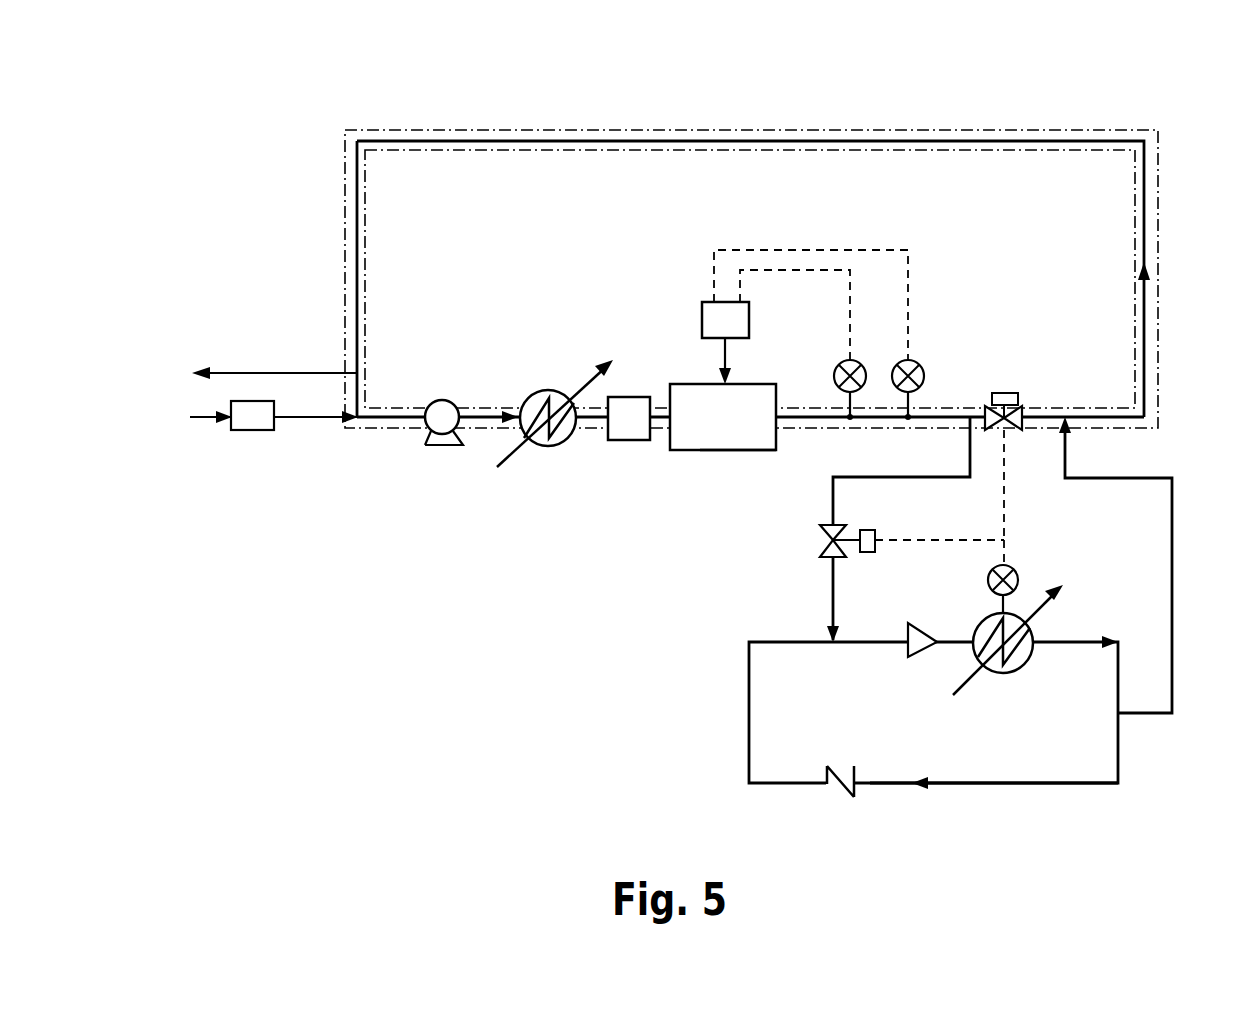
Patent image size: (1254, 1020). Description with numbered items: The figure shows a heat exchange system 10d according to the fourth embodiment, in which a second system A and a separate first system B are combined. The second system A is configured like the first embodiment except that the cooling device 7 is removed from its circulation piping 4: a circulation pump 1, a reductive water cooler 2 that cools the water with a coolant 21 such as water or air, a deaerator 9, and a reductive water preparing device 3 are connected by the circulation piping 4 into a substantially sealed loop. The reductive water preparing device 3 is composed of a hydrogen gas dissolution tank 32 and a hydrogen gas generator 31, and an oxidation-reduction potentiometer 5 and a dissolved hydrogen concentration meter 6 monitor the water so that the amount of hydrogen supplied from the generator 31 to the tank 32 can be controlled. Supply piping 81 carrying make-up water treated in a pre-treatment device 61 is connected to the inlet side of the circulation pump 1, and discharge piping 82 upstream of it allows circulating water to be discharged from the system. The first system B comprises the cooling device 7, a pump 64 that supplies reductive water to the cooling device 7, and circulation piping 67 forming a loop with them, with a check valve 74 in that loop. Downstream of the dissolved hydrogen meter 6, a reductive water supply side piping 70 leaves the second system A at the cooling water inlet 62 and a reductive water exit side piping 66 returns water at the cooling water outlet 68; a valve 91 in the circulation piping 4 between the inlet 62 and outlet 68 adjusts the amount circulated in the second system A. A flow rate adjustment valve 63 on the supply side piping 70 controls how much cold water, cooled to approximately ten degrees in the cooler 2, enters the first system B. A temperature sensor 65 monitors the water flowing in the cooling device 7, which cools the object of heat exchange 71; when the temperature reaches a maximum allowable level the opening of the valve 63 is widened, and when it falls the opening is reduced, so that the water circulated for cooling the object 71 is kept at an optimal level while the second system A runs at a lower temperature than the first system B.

The heat exchange system 10d is at (902, 118).
The circulation piping 4 is at (1150, 357).
The second system A is at (1158, 237).
The first system B is at (740, 739).
The discharge piping 82 is at (258, 372).
The pre-treatment device 61 is at (242, 431).
The supply piping 81 is at (325, 420).
The circulation pump 1 is at (425, 441).
The reductive water cooler 2 is at (550, 447).
The coolant 21 is at (590, 396).
The deaerator 9 is at (630, 442).
The reductive water preparing device 3 is at (710, 463).
The hydrogen gas dissolution tank 32 is at (740, 451).
The hydrogen gas generator 31 is at (702, 318).
The oxidation-reduction potentiometer 5 is at (838, 370).
The dissolved hydrogen concentration meter 6 is at (925, 371).
The cooling water inlet 62 is at (980, 409).
The cooling water outlet 68 is at (1066, 412).
The valve 91 is at (1024, 440).
The reductive water supply side piping 70 is at (870, 477).
The flow rate adjustment valve 63 is at (860, 531).
The pump 64 is at (907, 625).
The temperature sensor 65 is at (987, 580).
The cooling device 7 is at (1018, 667).
The object of heat exchange 71 is at (1057, 588).
The check valve 74 is at (826, 792).
The circulation piping 67 is at (1056, 784).
The reductive water exit side piping 66 is at (1149, 478).